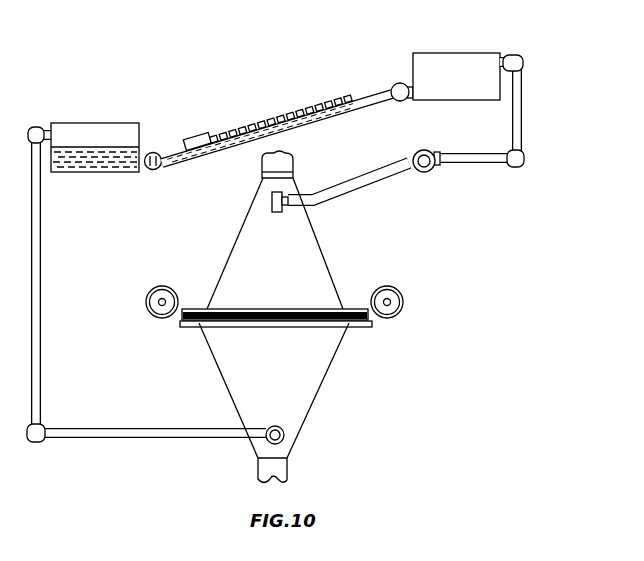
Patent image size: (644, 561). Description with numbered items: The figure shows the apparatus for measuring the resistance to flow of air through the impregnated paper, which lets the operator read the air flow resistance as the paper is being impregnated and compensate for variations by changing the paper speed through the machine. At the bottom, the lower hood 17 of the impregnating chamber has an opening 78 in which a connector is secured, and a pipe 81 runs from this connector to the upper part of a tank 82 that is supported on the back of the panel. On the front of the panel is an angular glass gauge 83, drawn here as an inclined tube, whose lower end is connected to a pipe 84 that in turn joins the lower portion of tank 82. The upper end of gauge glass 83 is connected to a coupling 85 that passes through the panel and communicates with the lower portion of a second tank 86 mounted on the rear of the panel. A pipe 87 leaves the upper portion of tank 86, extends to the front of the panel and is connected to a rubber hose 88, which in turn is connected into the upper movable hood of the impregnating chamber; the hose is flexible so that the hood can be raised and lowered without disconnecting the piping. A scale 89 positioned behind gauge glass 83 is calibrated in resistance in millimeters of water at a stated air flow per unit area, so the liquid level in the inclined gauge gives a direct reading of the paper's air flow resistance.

The lower hood 17 is at (318, 377).
The opening 78 is at (283, 437).
The pipe 81 is at (187, 435).
The tank 82 is at (62, 133).
The angular glass gauge 83 is at (330, 112).
The pipe 84 is at (143, 168).
The coupling 85 is at (393, 86).
The tank 86 is at (447, 62).
The pipe 87 is at (518, 113).
The rubber hose 88 is at (352, 187).
The scale 89 is at (277, 112).